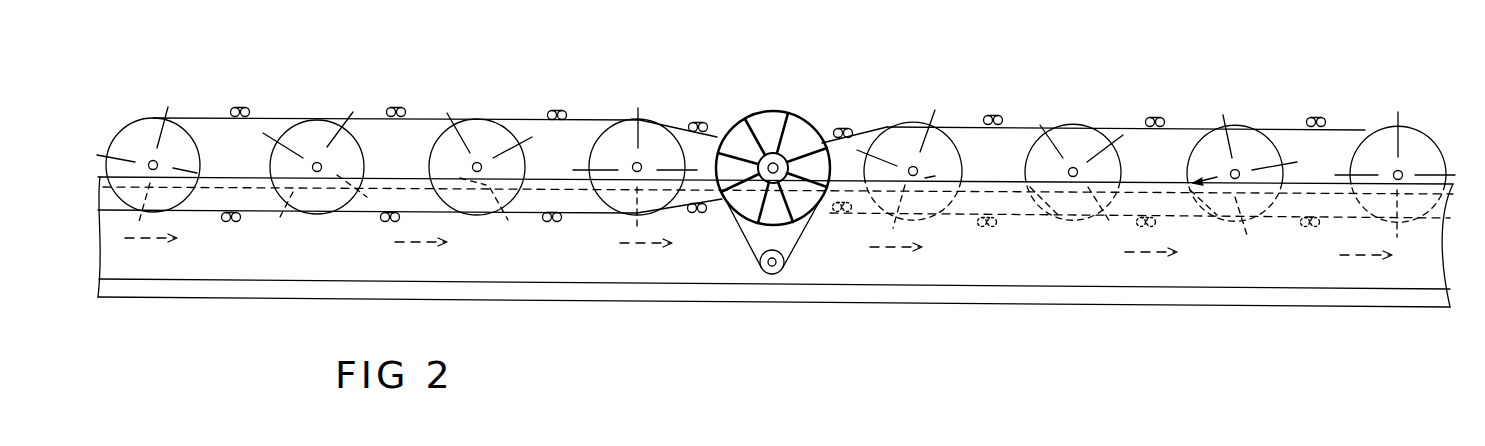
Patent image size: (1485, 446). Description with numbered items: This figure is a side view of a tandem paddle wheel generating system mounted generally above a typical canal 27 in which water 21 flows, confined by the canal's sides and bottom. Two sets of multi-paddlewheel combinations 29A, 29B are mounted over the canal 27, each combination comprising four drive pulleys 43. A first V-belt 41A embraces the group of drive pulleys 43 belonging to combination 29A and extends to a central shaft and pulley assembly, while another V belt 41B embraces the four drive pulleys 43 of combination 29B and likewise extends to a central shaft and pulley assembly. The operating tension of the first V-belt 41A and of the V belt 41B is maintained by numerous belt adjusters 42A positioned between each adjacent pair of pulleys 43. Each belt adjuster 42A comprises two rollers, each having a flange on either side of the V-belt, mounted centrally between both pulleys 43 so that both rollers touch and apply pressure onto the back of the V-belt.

The water 21 is at (1130, 257).
The canal 27 is at (863, 310).
The multi-paddlewheel combination 29A is at (1397, 93).
The multi-paddlewheel combination 29B is at (673, 92).
The first V-belt 41A is at (1280, 128).
The V belt 41B is at (617, 85).
The belt adjuster 42A is at (236, 112).
The drive pulley 43 is at (478, 120).